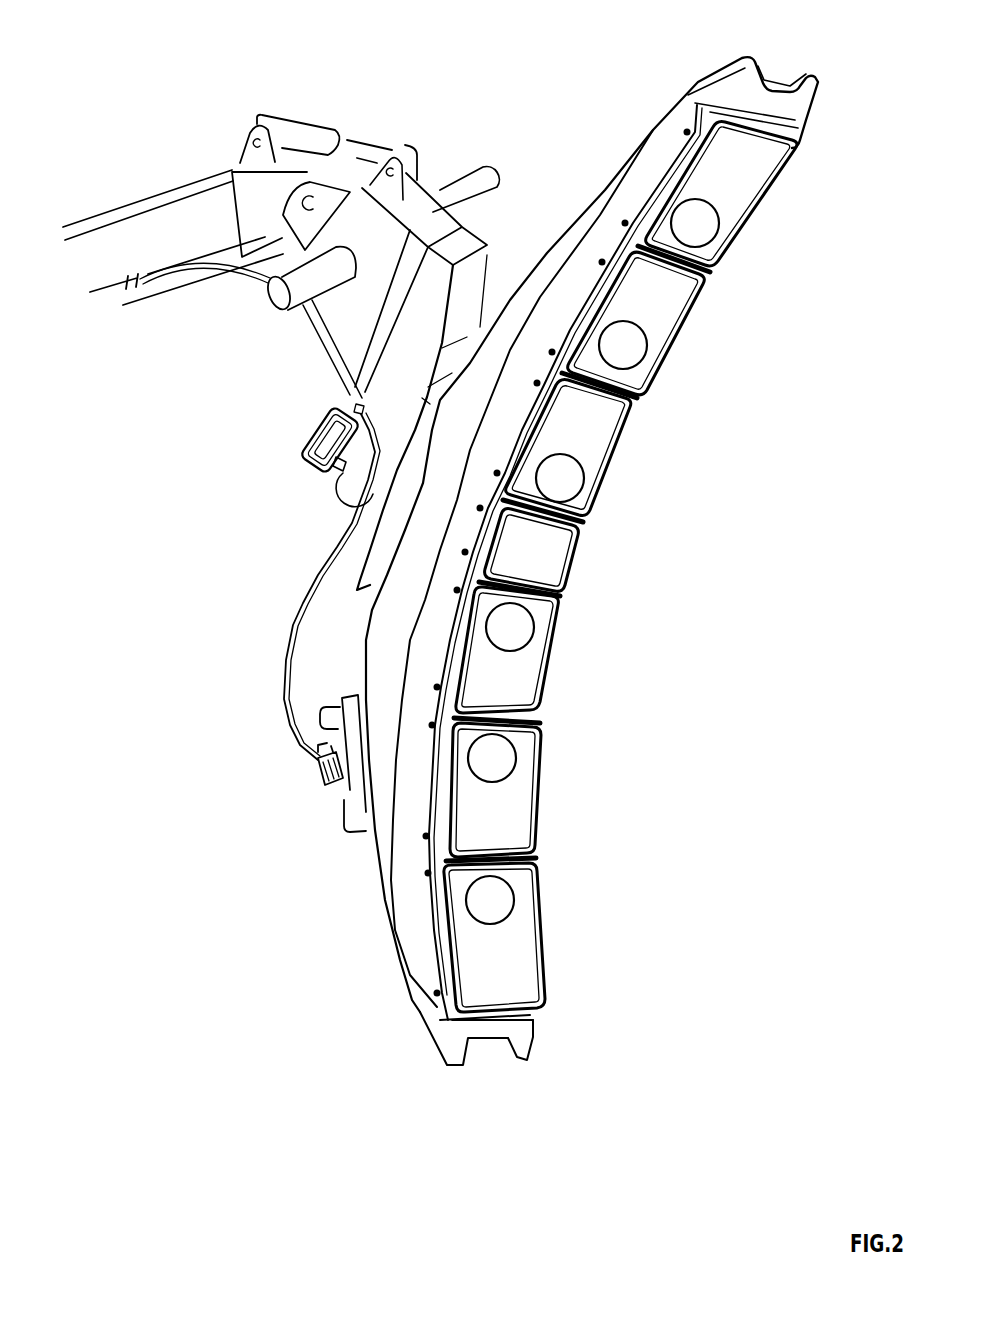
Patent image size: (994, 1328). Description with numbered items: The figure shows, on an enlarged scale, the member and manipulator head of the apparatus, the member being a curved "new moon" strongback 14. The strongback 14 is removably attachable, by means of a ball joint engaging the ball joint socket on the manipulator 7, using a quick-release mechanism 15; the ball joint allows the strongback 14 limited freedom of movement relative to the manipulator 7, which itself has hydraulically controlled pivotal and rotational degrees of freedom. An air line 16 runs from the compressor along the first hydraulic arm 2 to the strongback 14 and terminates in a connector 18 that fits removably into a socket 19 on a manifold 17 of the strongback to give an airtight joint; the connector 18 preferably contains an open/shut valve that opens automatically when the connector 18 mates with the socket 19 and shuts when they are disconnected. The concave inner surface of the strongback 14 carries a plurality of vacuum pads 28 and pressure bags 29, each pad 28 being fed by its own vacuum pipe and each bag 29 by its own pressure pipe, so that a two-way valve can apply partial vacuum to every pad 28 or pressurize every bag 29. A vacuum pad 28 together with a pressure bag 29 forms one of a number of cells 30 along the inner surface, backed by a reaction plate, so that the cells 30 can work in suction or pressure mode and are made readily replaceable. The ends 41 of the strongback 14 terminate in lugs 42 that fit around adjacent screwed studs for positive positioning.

The first hydraulic arm 2 is at (173, 228).
The manipulator 7 is at (305, 105).
The strongback 14 is at (588, 240).
The quick-release mechanism 15 is at (300, 455).
The air line 16 is at (284, 621).
The manifold 17 is at (350, 792).
The connector 18 is at (308, 768).
The socket 19 is at (213, 794).
The vacuum pads 28 is at (572, 478).
The pressure bags 29 is at (523, 685).
The cells 30 is at (542, 813).
The ends 41 is at (517, 1028).
The lugs 42 is at (528, 1047).